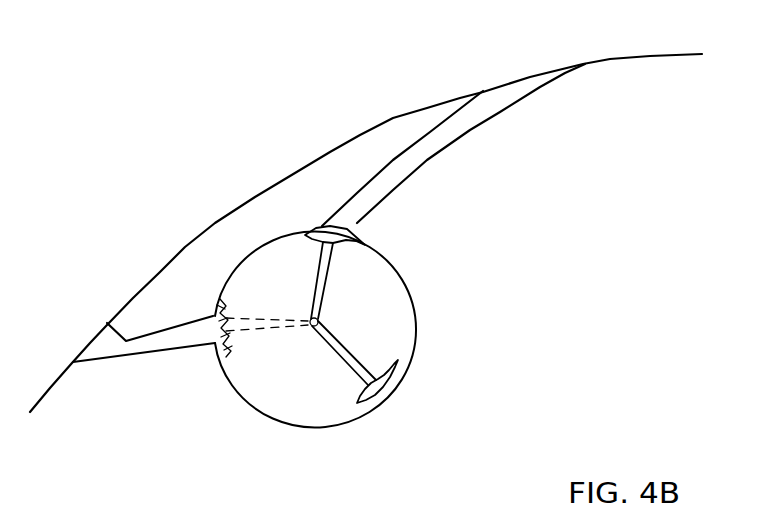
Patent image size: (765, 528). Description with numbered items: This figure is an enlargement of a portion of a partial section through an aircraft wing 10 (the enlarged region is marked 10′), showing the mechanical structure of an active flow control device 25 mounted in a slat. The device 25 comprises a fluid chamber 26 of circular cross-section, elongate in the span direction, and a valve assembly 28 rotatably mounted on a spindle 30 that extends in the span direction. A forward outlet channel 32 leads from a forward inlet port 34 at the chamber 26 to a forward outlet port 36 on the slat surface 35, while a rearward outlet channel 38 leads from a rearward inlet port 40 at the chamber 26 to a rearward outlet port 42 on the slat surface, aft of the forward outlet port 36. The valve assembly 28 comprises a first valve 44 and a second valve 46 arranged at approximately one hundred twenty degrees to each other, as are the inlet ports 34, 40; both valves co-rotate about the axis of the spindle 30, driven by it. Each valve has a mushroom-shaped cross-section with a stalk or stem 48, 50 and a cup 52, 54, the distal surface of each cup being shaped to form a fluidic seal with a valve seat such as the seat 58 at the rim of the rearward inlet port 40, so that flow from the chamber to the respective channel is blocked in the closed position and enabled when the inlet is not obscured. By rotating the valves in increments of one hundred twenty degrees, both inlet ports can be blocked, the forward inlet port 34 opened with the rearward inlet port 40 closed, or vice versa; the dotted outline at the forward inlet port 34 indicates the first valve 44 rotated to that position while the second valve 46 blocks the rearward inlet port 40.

The aircraft wing 10 is at (396, 71).
The wing reference 10′ is at (594, 208).
The active flow control device 25 is at (562, 276).
The fluid chamber 26 is at (256, 389).
The valve assembly 28 is at (350, 349).
The spindle 30 is at (318, 320).
The forward outlet channel 32 is at (148, 347).
The forward inlet port 34 is at (207, 334).
The slat surface 35 is at (190, 246).
The forward outlet port 36 is at (102, 340).
The rearward outlet channel 38 is at (444, 144).
The rearward inlet port 40 is at (348, 214).
The rearward outlet port 42 is at (529, 87).
The first valve 44 is at (317, 254).
The second valve 46 is at (396, 360).
The stalk or stem 48 is at (333, 272).
The stalk or stem 50 is at (400, 358).
The cup 52 is at (322, 224).
The cup 54 is at (384, 394).
The valve seat 58 is at (323, 222).